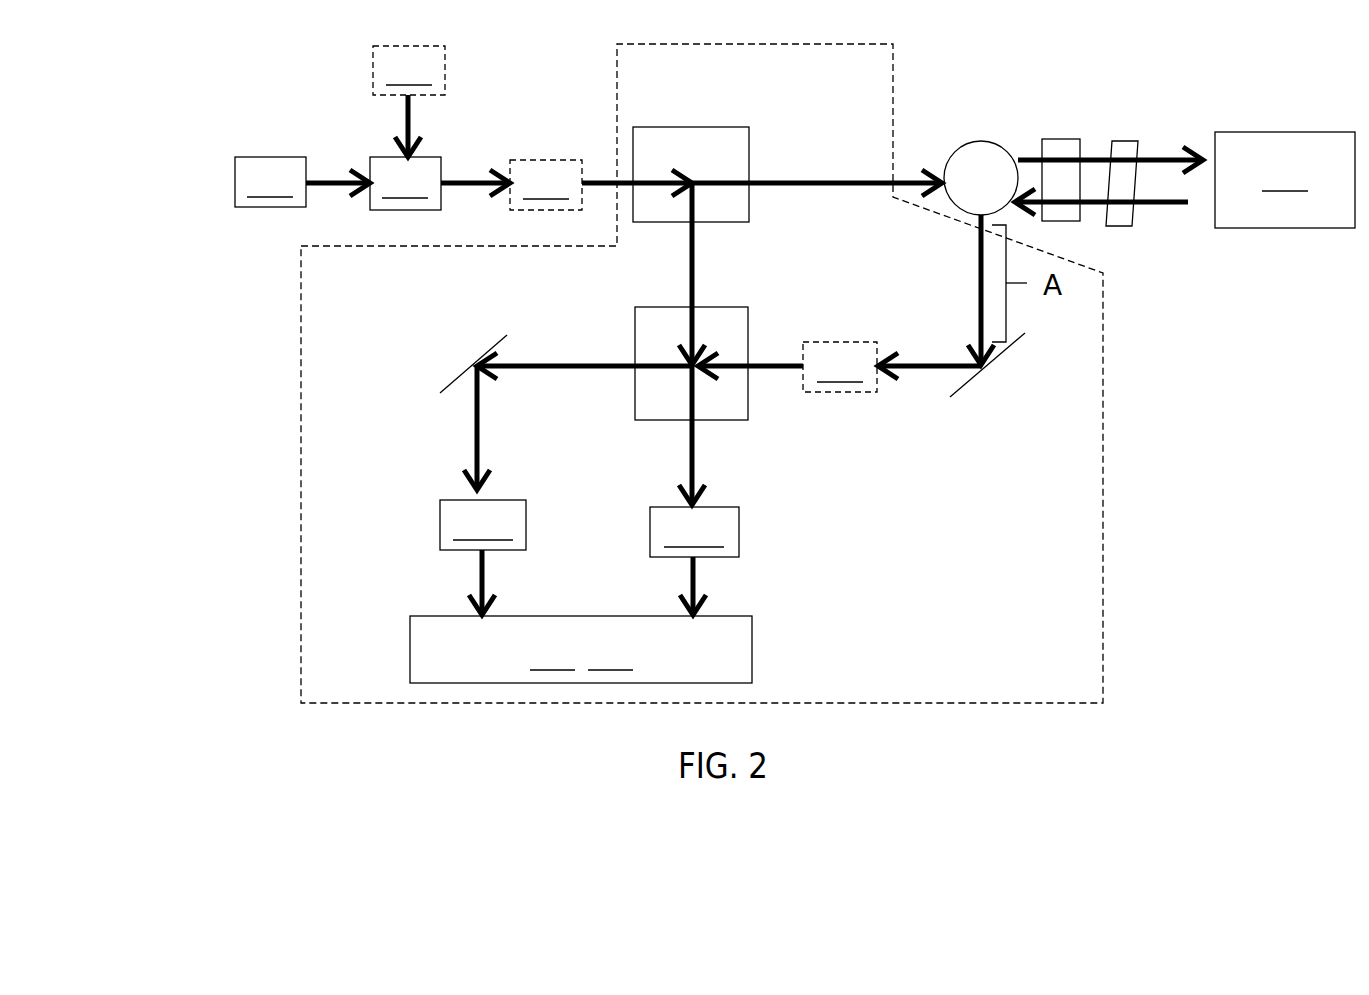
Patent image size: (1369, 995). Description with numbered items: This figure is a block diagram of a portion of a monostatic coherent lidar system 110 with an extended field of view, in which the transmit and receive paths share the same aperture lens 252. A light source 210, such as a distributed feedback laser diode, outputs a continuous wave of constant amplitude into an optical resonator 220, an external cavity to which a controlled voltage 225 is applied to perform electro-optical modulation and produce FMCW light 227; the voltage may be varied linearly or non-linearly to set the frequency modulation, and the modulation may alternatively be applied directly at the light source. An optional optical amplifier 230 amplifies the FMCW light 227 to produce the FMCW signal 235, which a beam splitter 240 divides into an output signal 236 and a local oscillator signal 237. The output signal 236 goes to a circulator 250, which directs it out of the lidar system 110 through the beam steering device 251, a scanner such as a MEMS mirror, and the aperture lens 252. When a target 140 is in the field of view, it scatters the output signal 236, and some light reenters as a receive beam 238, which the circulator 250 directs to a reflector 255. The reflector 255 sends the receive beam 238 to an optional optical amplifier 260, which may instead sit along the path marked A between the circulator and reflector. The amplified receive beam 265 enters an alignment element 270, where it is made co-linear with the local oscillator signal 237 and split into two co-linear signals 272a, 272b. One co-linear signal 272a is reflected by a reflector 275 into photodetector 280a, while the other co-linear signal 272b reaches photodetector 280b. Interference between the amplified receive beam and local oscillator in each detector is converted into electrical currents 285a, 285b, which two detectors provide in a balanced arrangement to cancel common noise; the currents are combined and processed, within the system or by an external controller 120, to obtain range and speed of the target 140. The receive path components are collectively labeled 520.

The lidar system 110 is at (157, 131).
The controller 120 is at (581, 649).
The target 140 is at (1285, 180).
The light source 210 is at (270, 182).
The optical resonator 220 is at (405, 183).
The controlled voltage 225 is at (409, 101).
The FMCW light 227 is at (455, 180).
The optical amplifier 230 is at (546, 185).
The FMCW signal 235 is at (597, 178).
The output signal 236 is at (797, 178).
The local oscillator signal 237 is at (693, 280).
The receive beam 238 is at (1165, 204).
The beam splitter 240 is at (717, 128).
The circulator 250 is at (968, 143).
The beam steering device 251 is at (1050, 139).
The aperture lens 252 is at (1114, 141).
The reflector 255 is at (1015, 335).
The optical amplifier 260 is at (840, 367).
The amplified receive beam 265 is at (772, 370).
The alignment element 270 is at (635, 330).
The co-linear signal 272a is at (547, 368).
The co-linear signal 272b is at (693, 440).
The reflector 275 is at (460, 376).
The photodetector 280a is at (483, 525).
The photodetector 280b is at (694, 532).
The electrical current 285a is at (477, 576).
The electrical current 285b is at (697, 578).
The receive path components 520 is at (301, 494).